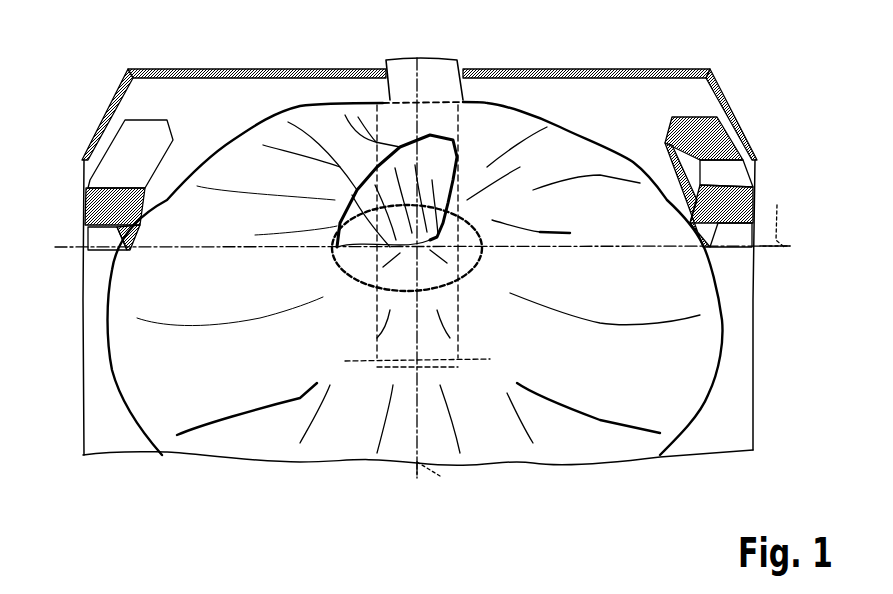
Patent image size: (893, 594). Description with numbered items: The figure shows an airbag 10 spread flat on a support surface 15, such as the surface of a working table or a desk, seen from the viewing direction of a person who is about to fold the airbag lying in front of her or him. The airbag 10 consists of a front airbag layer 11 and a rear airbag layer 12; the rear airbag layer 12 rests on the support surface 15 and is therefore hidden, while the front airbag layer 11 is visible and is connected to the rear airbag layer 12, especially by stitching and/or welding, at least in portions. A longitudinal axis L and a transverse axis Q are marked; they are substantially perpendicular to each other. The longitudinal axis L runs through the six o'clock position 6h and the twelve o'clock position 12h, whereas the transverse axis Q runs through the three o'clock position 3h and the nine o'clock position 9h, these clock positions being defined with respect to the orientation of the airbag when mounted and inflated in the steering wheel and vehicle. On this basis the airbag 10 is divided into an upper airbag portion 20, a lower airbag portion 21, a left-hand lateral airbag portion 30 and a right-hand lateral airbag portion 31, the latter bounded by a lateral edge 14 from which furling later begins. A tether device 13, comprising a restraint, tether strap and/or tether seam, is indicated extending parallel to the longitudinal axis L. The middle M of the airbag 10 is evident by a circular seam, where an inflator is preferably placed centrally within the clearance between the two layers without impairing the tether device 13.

The airbag 10 is at (551, 82).
The front airbag layer 11 is at (242, 150).
The rear airbag layer 12 is at (262, 150).
The tether device 13 is at (378, 145).
The lateral edge 14 is at (725, 335).
The support surface 15 is at (648, 118).
The upper airbag portion 20 is at (482, 133).
The lower airbag portion 21 is at (360, 440).
The left-hand lateral airbag portion 30 is at (150, 283).
The right-hand lateral airbag portion 31 is at (688, 279).
The 12 o'clock position 12h is at (417, 252).
The 3 o'clock position 3h is at (785, 245).
The 6 o'clock position 6h is at (416, 487).
The 9 o'clock position 9h is at (409, 247).
The middle of the airbag M is at (480, 255).
The transverse axis Q is at (776, 212).
The longitudinal axis L is at (425, 468).